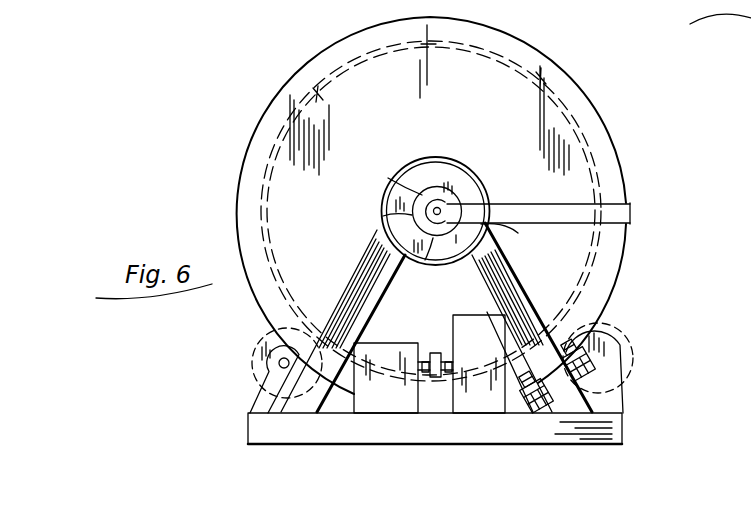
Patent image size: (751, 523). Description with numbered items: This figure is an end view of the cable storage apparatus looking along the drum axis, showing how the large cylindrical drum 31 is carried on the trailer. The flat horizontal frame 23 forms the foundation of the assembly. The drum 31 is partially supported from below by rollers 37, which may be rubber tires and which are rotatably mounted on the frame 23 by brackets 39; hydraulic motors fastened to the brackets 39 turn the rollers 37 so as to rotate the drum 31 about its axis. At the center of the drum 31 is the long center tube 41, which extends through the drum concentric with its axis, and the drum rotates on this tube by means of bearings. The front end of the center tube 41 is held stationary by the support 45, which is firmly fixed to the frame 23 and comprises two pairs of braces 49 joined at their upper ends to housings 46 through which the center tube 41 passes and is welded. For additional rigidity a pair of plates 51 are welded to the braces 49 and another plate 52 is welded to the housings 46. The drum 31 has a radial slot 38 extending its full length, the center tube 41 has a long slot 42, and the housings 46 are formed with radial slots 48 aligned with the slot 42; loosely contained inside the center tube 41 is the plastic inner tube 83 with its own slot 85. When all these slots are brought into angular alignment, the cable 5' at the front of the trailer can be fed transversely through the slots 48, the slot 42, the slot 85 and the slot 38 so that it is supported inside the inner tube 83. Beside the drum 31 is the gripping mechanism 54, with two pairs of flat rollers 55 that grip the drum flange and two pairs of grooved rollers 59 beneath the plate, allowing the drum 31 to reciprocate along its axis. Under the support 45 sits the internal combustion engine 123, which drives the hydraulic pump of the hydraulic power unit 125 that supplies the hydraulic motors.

The drum 31 is at (322, 96).
The plate 52 is at (428, 157).
The housings 46 is at (443, 176).
The inner tube 83 is at (388, 178).
The slot 85 is at (470, 196).
The slot 42 is at (492, 205).
The radial slot 38 is at (633, 224).
The radial slots 48 is at (514, 239).
The cable 5' is at (367, 209).
The center tube 41 is at (432, 260).
The braces 49 is at (362, 284).
The support 45 is at (530, 283).
The plates 51 is at (366, 252).
The engine 123 is at (388, 354).
The hydraulic power unit 125 is at (488, 325).
The frame 23 is at (623, 427).
The rollers 37 is at (266, 334).
The brackets 39 is at (258, 400).
The gripping mechanism 54 is at (624, 380).
The flat rollers 55 is at (519, 372).
The grooved rollers 59 is at (543, 404).